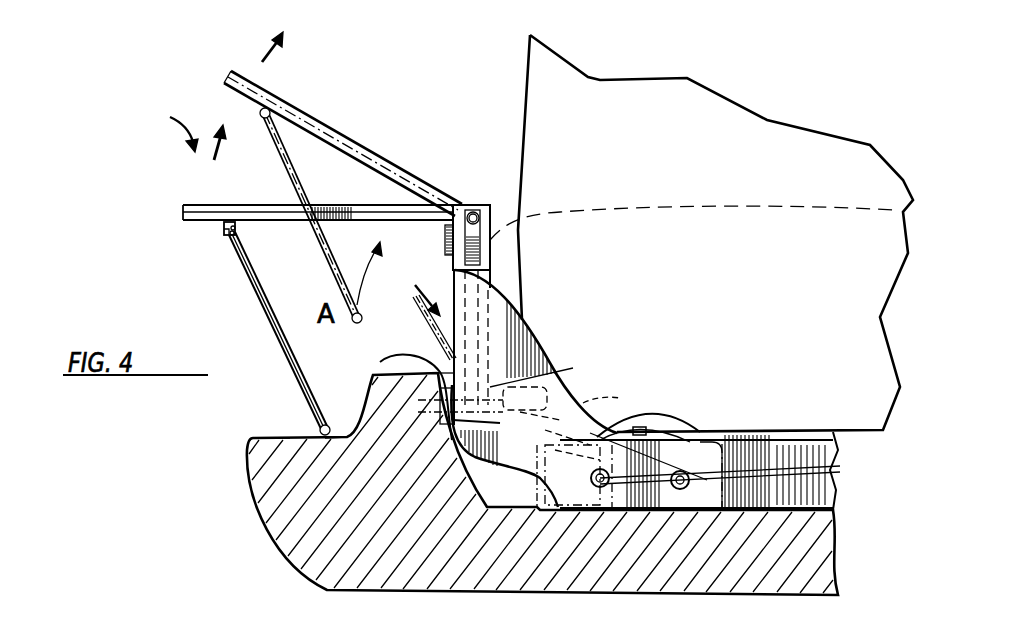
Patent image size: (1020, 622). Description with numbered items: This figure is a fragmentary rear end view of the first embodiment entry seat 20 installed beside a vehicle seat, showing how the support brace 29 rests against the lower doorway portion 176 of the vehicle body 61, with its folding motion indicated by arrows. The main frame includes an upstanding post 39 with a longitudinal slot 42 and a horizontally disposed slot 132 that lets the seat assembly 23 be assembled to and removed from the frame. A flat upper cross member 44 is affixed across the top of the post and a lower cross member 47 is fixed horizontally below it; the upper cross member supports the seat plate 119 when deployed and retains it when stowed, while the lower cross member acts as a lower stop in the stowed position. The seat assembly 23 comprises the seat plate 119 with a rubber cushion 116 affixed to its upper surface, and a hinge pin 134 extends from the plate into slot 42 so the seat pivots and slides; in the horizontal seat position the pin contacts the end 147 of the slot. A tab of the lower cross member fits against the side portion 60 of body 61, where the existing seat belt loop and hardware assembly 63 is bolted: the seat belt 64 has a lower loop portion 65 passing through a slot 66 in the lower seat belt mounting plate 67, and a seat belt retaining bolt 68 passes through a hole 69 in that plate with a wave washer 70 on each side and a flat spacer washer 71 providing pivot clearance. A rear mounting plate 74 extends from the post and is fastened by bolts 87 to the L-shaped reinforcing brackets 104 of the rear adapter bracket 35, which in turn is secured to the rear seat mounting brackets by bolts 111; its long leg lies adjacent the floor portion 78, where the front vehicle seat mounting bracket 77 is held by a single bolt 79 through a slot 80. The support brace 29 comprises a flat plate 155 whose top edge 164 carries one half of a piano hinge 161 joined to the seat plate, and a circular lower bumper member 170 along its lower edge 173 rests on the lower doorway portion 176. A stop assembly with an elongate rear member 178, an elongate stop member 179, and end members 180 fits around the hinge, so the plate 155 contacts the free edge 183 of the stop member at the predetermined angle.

The entry seat 20 is at (206, 96).
The seat assembly 23 is at (165, 210).
The support brace 29 is at (300, 330).
The rear adapter bracket 35 is at (808, 420).
The post 39 is at (471, 204).
The longitudinal slot 42 is at (500, 246).
The upper cross member 44 is at (450, 236).
The lower cross member 47 is at (525, 401).
The side portion 60 is at (447, 455).
The vehicle body 61 is at (362, 594).
The seat belt loop and hardware assembly 63 is at (409, 283).
The seat belt 64 is at (415, 310).
The lower loop portion 65 is at (435, 355).
The slot 66 is at (537, 367).
The lower seat belt mounting plate 67 is at (552, 376).
The seat belt retaining bolt 68 is at (583, 403).
The hole 69 is at (443, 372).
The wave washer 70 is at (450, 440).
The flat spacer washer 71 is at (440, 408).
The rear mounting plate 74 is at (640, 413).
The front vehicle seat mounting bracket 77 is at (555, 442).
The floor portion 78 is at (800, 513).
The bolt 79 is at (620, 435).
The slot 80 is at (538, 470).
The bolt 87 is at (838, 470).
The L-shaped reinforcing bracket 104 is at (700, 430).
The bolt 111 is at (650, 428).
The rubber cushion 116 is at (294, 204).
The seat plate 119 is at (217, 227).
The horizontally disposed slot 132 is at (482, 283).
The hinge pin 134 is at (478, 220).
The end 147 is at (488, 208).
The flat plate 155 is at (293, 373).
The piano hinge 161 is at (255, 233).
The top edge 164 is at (240, 228).
The lower bumper member 170 is at (318, 430).
The lower edge 173 is at (320, 411).
The lower doorway portion 176 is at (252, 460).
The elongate rear member 178 is at (222, 237).
The elongate stop member 179 is at (231, 236).
The end member 180 is at (230, 222).
The free edge 183 is at (240, 238).